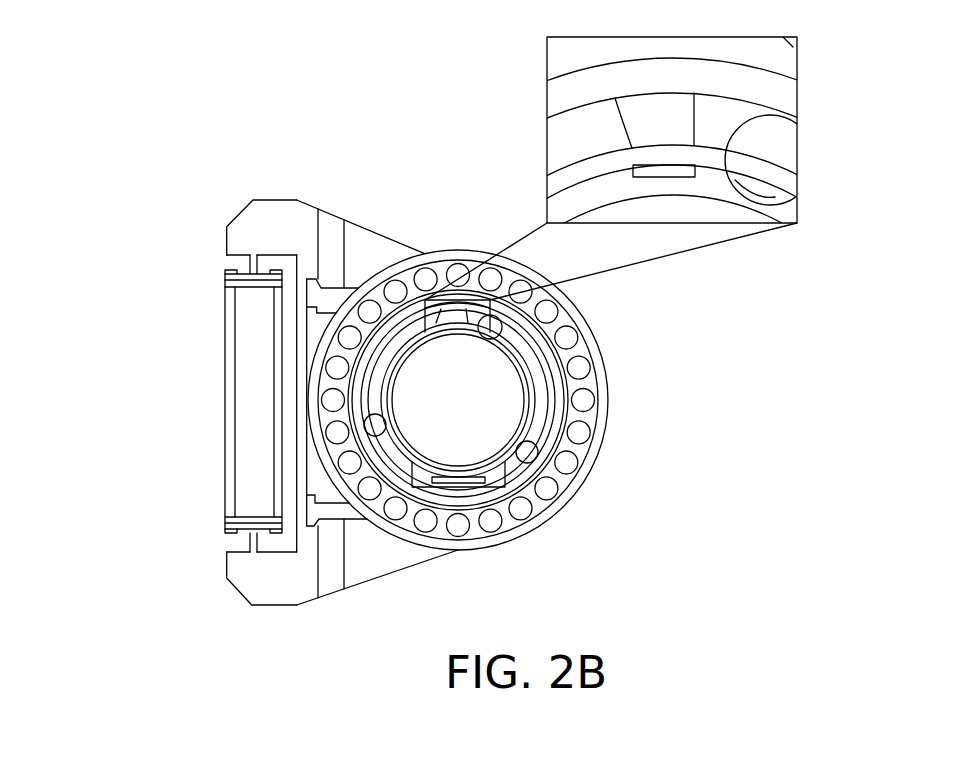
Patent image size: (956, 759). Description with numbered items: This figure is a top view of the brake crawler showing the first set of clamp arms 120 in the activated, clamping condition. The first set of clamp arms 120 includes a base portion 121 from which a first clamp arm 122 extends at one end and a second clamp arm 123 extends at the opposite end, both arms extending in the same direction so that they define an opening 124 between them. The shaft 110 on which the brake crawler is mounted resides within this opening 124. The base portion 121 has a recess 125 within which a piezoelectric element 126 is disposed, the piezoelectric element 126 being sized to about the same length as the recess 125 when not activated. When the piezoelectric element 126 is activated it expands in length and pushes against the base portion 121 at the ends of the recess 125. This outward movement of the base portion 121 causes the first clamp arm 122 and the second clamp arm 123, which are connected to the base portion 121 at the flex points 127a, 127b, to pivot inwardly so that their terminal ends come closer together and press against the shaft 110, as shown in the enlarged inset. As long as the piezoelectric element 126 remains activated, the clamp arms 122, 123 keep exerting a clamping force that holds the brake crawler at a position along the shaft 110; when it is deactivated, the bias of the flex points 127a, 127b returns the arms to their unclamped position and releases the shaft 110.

The shaft 110 is at (467, 400).
The first set of clamp arms 120 is at (210, 192).
The base portion 121 is at (253, 580).
The first clamp arm 122 is at (367, 250).
The second clamp arm 123 is at (378, 549).
The opening 124 is at (388, 458).
The recess 125 is at (290, 440).
The piezoelectric element 126 is at (245, 352).
The flex point 127a is at (306, 288).
The flex point 127b is at (281, 517).